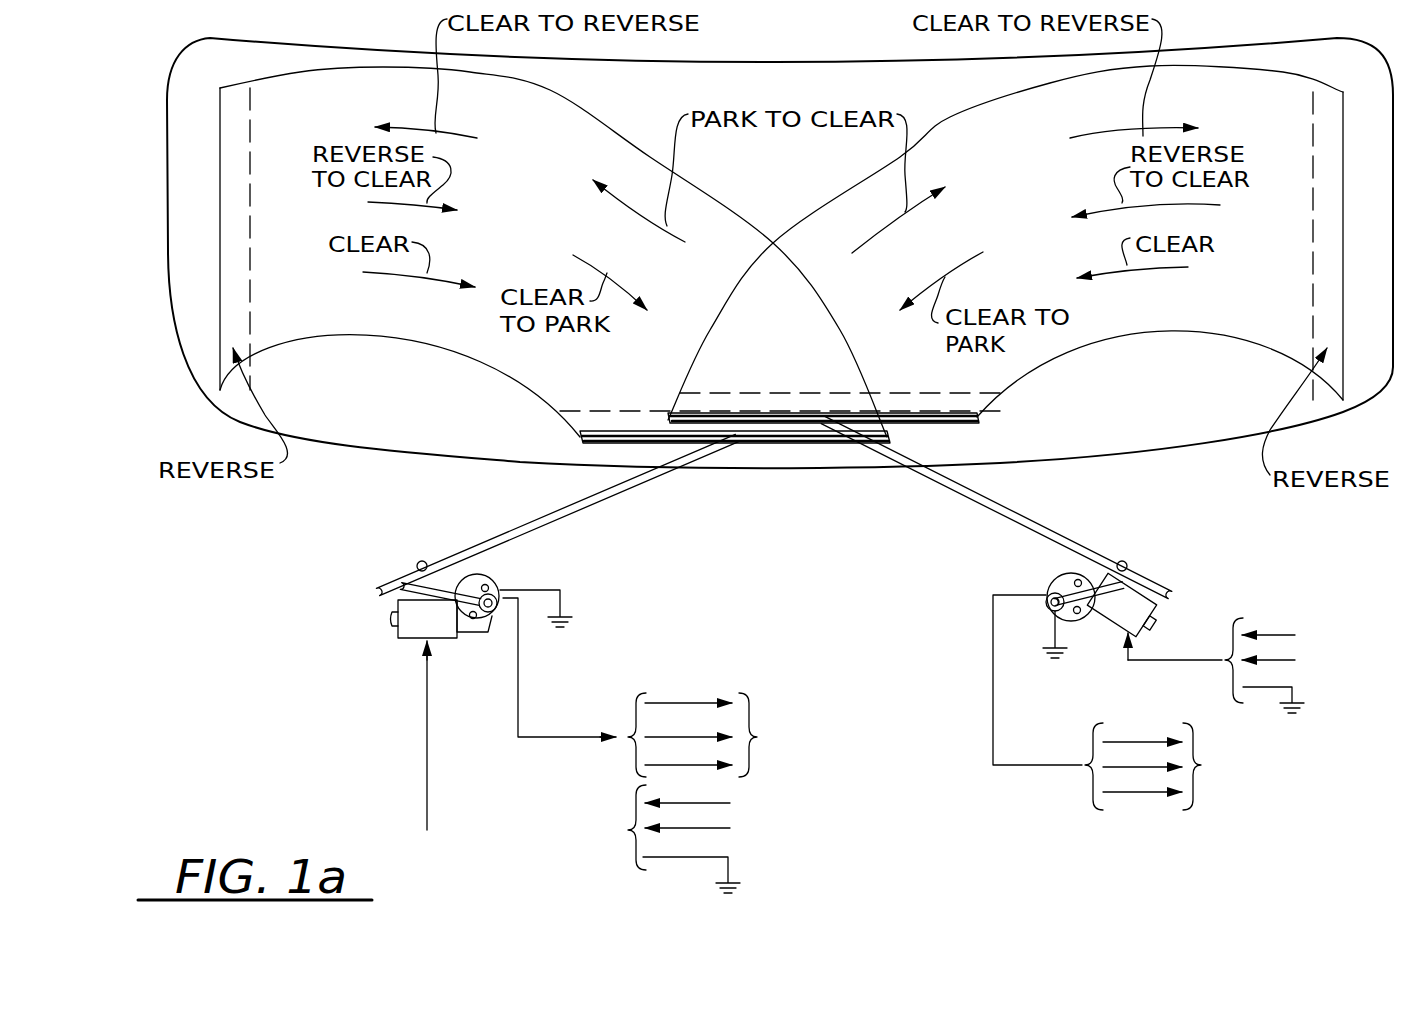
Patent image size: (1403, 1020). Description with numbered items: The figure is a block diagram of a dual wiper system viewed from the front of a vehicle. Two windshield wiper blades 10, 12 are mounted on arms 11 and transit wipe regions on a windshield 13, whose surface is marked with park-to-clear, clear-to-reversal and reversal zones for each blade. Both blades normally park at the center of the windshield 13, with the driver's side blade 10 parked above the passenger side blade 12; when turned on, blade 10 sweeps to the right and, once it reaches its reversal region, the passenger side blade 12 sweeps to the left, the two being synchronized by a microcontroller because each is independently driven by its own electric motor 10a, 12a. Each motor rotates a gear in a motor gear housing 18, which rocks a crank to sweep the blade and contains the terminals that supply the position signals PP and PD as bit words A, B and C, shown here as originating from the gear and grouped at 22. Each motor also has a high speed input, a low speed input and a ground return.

The windshield 13 is at (165, 150).
The driver's side wiper blade 10 is at (960, 422).
The passenger side wiper blade 12 is at (772, 443).
The arm 11 is at (497, 537).
The motor gear housing 18 is at (500, 573).
The electric motor 10a is at (415, 628).
The electric motor 12a is at (1117, 617).
The motor connector terminals 22 is at (753, 705).